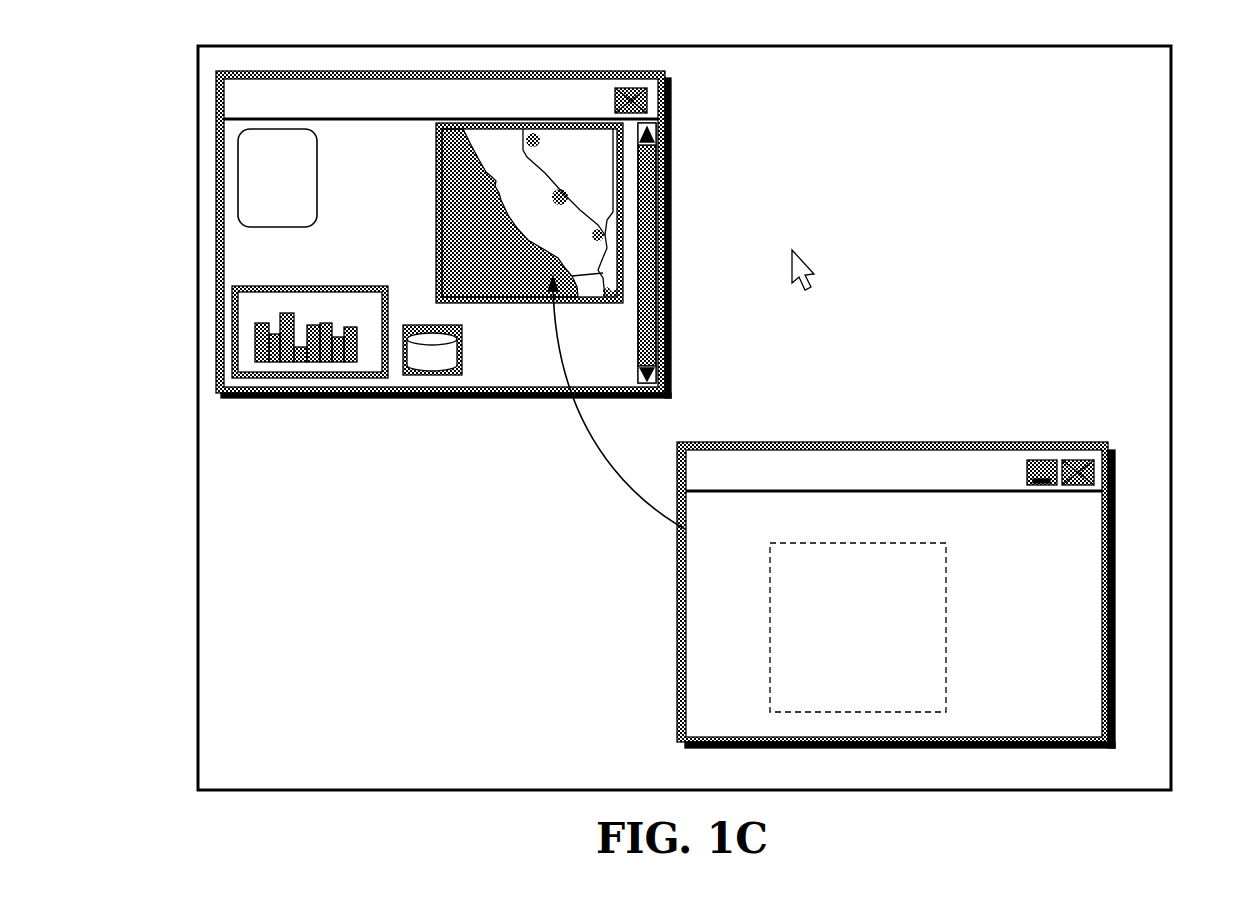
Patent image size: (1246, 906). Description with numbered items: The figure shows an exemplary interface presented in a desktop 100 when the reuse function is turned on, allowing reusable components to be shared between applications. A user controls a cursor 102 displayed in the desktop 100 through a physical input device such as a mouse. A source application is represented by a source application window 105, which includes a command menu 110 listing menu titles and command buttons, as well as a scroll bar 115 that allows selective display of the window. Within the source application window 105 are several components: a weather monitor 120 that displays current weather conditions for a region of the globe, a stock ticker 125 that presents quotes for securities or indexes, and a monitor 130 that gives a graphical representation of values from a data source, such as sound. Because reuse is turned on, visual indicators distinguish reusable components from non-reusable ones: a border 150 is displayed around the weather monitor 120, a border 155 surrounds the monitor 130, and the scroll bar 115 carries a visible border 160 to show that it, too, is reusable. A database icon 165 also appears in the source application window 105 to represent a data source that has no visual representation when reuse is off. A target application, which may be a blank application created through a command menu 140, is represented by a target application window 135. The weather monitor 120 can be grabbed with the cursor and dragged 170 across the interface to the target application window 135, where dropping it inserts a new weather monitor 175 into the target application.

The desktop 100 is at (1172, 178).
The cursor 102 is at (807, 268).
The source application window 105 is at (671, 127).
The command menu 110 is at (575, 75).
The scroll bar 115 is at (646, 288).
The weather monitor 120 is at (548, 298).
The stock ticker 125 is at (240, 172).
The monitor 130 is at (304, 362).
The target application window 135 is at (677, 607).
The command menu 140 is at (859, 567).
The border 150 is at (496, 233).
The border 155 is at (318, 375).
The visible border 160 is at (681, 253).
The database icon 165 is at (435, 376).
The drag operation 170 is at (608, 458).
The new weather monitor 175 is at (946, 580).